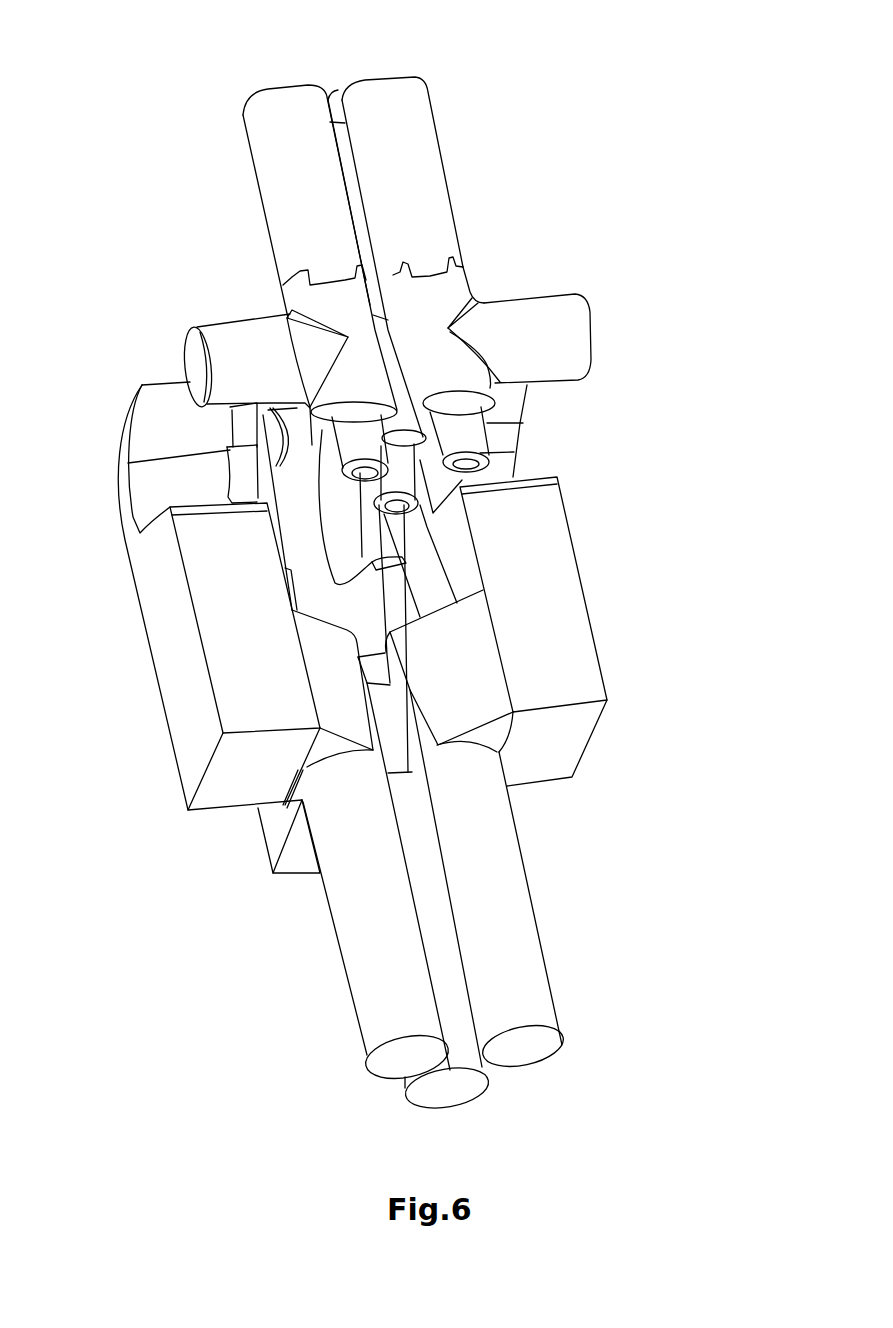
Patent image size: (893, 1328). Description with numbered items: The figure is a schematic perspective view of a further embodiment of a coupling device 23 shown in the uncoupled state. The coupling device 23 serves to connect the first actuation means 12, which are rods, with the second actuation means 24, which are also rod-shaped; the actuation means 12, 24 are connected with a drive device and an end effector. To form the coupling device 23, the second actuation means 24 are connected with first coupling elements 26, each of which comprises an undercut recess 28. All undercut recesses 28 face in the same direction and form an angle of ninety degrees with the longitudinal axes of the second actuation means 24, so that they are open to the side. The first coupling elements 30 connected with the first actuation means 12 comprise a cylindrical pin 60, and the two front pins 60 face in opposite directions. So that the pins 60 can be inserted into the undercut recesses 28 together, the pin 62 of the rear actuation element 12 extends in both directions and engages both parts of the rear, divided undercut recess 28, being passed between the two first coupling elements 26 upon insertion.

The first actuation means 12 is at (280, 167).
The coupling device 23 is at (620, 433).
The second actuation means 24 is at (380, 970).
The first coupling elements 26 is at (227, 602).
The undercut recess 28 is at (342, 530).
The first coupling elements 30 is at (537, 264).
The cylindrical pin 60 is at (242, 353).
The pin 62 is at (305, 385).